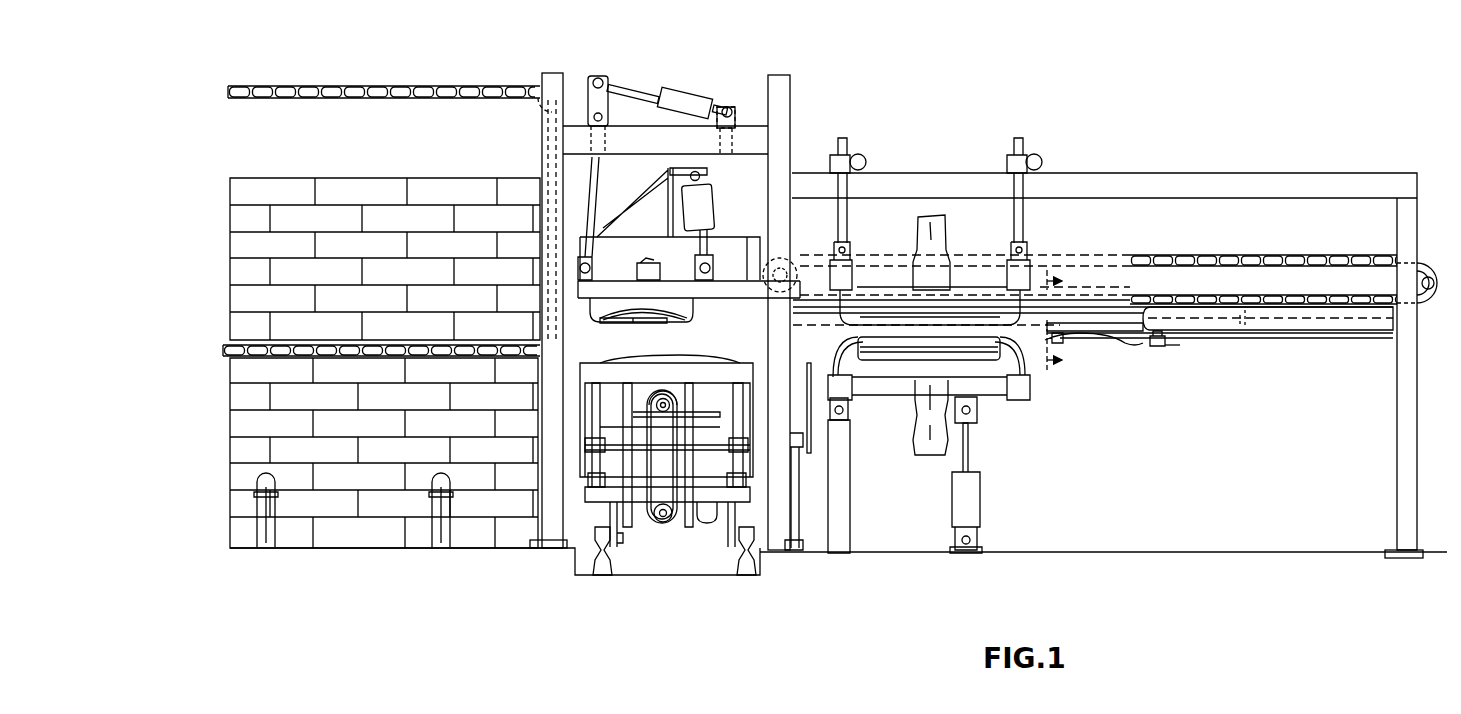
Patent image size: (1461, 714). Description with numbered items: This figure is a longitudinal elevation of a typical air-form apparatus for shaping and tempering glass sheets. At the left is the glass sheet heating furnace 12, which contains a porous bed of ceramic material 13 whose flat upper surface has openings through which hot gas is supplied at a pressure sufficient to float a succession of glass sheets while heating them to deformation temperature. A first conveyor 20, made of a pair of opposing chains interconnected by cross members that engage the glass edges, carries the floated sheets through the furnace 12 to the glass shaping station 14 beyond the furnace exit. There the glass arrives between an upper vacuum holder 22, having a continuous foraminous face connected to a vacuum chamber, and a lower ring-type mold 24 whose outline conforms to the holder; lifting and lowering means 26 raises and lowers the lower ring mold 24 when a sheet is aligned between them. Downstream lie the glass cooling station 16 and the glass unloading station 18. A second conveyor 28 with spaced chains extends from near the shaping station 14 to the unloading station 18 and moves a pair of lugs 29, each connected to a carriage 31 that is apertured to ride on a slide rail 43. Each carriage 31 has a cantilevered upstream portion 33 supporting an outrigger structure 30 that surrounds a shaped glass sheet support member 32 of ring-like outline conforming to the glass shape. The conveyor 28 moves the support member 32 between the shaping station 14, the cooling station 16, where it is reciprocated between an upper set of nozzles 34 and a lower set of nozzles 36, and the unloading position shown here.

The glass sheet heating furnace 12 is at (374, 182).
The porous bed of ceramic material 13 is at (234, 358).
The glass shaping station 14 is at (675, 67).
The glass cooling station 16 is at (897, 125).
The glass unloading station 18 is at (1242, 148).
The first conveyor 20 is at (442, 86).
The upper vacuum holder 22 is at (673, 324).
The lower ring-type mold 24 is at (682, 363).
The lifting and lowering means 26 is at (663, 527).
The second conveyor 28 is at (1230, 256).
The lugs 29 is at (1333, 296).
The outrigger structure 30 is at (1178, 348).
The carriage 31 is at (1325, 342).
The shaped glass sheet support member 32 is at (1146, 346).
The upstream portion 33 is at (1110, 331).
The upper set of nozzles 34 is at (978, 300).
The lower set of nozzles 36 is at (890, 383).
The slide rail 43 is at (1257, 334).